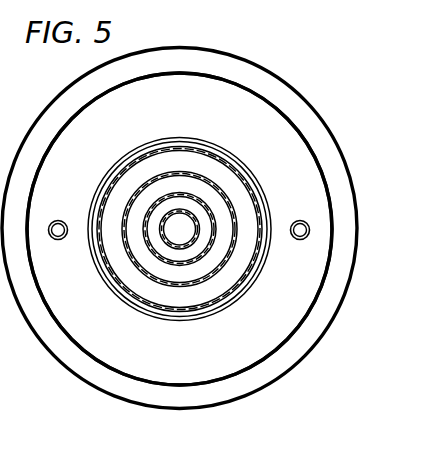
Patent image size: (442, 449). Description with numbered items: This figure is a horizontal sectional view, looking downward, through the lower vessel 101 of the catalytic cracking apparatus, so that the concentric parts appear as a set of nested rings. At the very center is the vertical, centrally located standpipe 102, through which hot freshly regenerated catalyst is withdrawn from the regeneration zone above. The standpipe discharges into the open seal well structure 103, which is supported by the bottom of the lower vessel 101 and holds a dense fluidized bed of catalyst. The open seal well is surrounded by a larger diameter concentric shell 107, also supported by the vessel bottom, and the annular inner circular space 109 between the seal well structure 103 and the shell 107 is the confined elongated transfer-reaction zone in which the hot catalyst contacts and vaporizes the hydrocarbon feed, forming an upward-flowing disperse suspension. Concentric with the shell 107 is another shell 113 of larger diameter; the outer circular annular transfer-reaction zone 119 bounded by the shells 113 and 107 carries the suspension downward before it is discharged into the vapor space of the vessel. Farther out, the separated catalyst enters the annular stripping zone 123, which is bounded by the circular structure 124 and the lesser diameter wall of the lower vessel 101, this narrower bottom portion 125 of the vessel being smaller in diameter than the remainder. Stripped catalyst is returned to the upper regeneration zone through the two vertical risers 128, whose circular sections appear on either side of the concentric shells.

The lower vessel 101 is at (219, 52).
The standpipe 102 is at (170, 212).
The open seal well structure 103 is at (176, 195).
The shell 107 is at (207, 176).
The annular inner circular space 109 is at (215, 207).
The shell 113 is at (188, 312).
The outer circular annular transfer-reaction zone 119 is at (215, 288).
The annular stripping zone 123 is at (179, 229).
The circular structure 124 is at (263, 266).
The bottom portion 125 is at (266, 97).
The vertical risers 128 is at (58, 219).